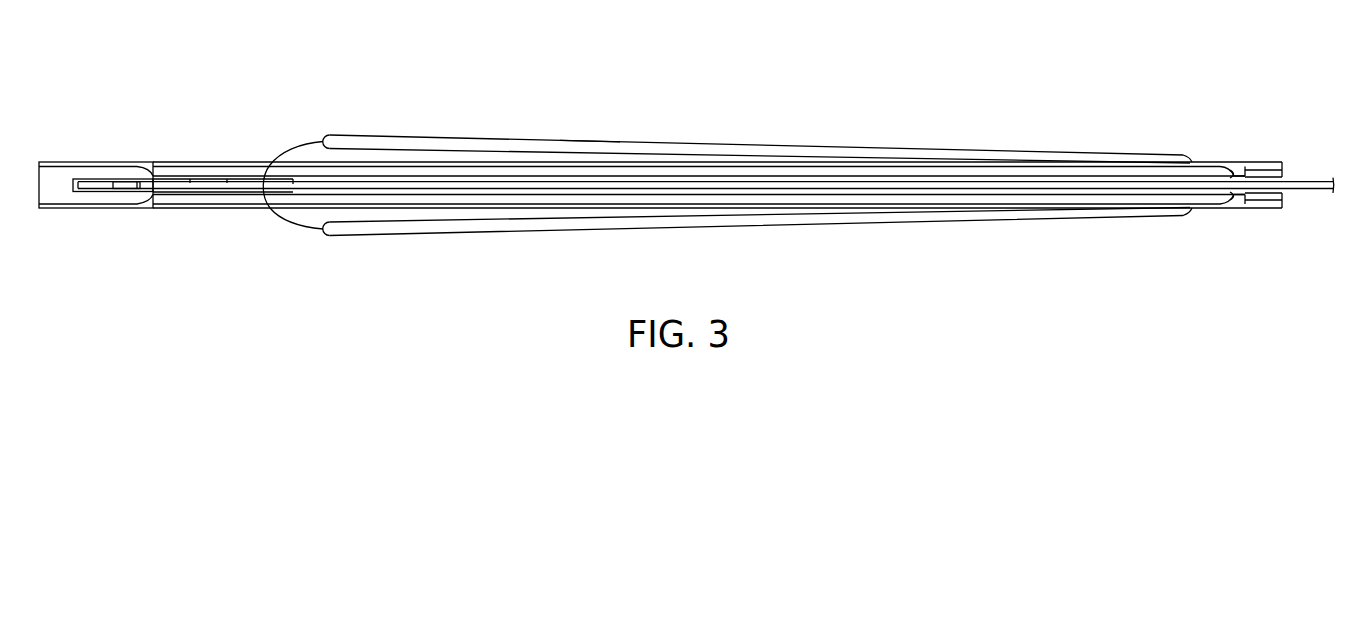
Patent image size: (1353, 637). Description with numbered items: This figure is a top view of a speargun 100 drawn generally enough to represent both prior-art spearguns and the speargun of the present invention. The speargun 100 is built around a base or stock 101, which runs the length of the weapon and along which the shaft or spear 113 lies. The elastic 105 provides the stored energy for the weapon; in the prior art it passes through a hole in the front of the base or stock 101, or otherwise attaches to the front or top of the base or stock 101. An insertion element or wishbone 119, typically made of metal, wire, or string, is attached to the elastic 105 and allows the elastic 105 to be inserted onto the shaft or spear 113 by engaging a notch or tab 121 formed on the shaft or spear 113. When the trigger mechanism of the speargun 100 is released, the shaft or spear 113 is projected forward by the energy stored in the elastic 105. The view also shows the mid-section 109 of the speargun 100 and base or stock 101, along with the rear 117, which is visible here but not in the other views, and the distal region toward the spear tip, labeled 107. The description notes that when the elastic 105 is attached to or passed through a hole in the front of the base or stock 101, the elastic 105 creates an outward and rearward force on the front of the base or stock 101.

The speargun 100 is at (703, 64).
The base or stock 101 is at (500, 212).
The elastic 105 is at (880, 152).
The distal end 107 is at (1210, 162).
The mid-section 109 is at (589, 153).
The shaft or spear 113 is at (1298, 181).
The rear 117 is at (108, 160).
The insertion element or wishbone 119 is at (295, 146).
The notch or tab 121 is at (293, 183).